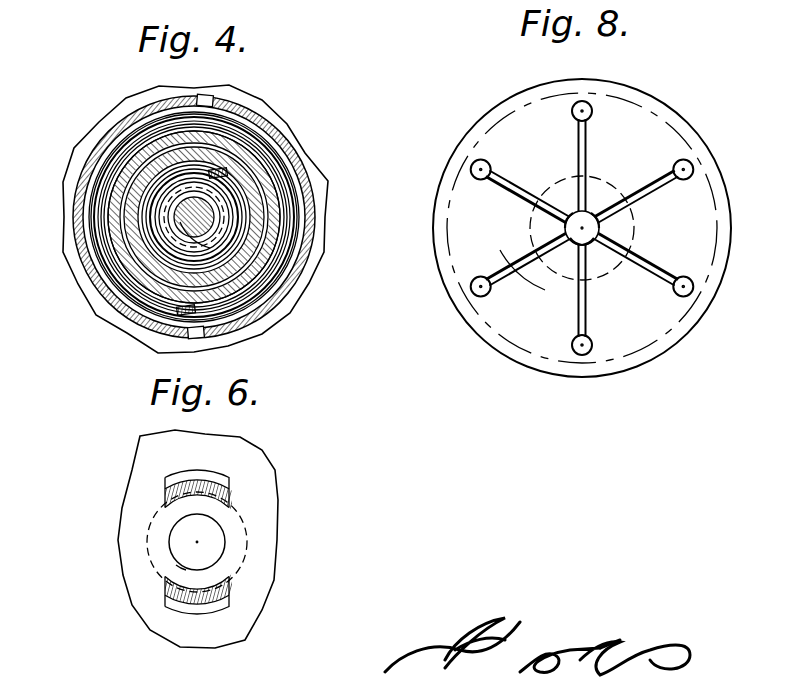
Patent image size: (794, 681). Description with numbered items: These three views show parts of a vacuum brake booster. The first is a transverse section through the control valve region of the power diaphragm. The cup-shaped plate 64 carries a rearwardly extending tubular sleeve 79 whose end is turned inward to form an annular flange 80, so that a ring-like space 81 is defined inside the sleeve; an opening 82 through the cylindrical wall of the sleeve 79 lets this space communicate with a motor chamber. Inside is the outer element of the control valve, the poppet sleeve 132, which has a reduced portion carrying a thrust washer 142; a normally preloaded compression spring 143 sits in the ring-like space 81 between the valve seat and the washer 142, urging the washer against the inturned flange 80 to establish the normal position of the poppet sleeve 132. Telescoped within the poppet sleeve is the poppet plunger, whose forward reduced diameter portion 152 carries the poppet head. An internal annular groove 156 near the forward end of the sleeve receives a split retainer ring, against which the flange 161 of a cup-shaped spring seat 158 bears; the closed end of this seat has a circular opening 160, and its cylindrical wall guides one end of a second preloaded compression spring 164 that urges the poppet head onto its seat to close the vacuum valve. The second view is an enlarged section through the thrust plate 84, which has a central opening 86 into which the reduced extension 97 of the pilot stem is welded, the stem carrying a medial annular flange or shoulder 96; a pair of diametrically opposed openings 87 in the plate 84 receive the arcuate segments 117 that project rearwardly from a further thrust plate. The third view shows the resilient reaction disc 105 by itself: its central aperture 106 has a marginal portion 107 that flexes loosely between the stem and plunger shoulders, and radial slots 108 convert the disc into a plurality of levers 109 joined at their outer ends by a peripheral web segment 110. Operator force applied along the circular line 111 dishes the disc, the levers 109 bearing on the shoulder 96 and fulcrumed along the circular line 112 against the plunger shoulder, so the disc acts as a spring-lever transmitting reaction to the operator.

In FIG. 4, the cup-shaped plate 64 is at (292, 297).
In FIG. 4, the tubular extension or sleeve 79 is at (283, 137).
In FIG. 4, the inturned annular flange 80 is at (290, 170).
In FIG. 4, the ring-like space 81 is at (112, 145).
In FIG. 4, the opening 82 is at (205, 100).
In FIG. 4, the poppet sleeve 132 is at (272, 193).
In FIG. 4, the thrust washer 142 is at (298, 222).
In FIG. 4, the compression spring 143 is at (240, 132).
In FIG. 4, the reduced diameter portion 152 is at (178, 245).
In FIG. 4, the internal annular groove 156 is at (120, 175).
In FIG. 4, the cup-shaped spring seat 158 is at (176, 222).
In FIG. 4, the circular opening 160 is at (203, 237).
In FIG. 4, the flange 161 is at (140, 210).
In FIG. 4, the compression spring 164 is at (170, 232).
In FIG. 8, the resilient metallic disc 105 is at (582, 228).
In FIG. 8, the central aperture 106 is at (592, 230).
In FIG. 8, the marginal portion 107 is at (588, 248).
In FIG. 8, the radial slots 108 is at (518, 186).
In FIG. 8, the levers 109 is at (547, 280).
In FIG. 8, the peripheral web segment 110 is at (518, 355).
In FIG. 8, the circular line 111 is at (497, 120).
In FIG. 8, the circular line 112 is at (592, 246).
In FIG. 6, the thrust plate 84 is at (262, 526).
In FIG. 6, the central opening 86 is at (174, 536).
In FIG. 6, the diametrically opposed openings 87 is at (226, 480).
In FIG. 6, the annular flange or shoulder 96 is at (155, 517).
In FIG. 6, the reduced extension 97 is at (172, 557).
In FIG. 6, the arcuate segments 117 is at (232, 496).